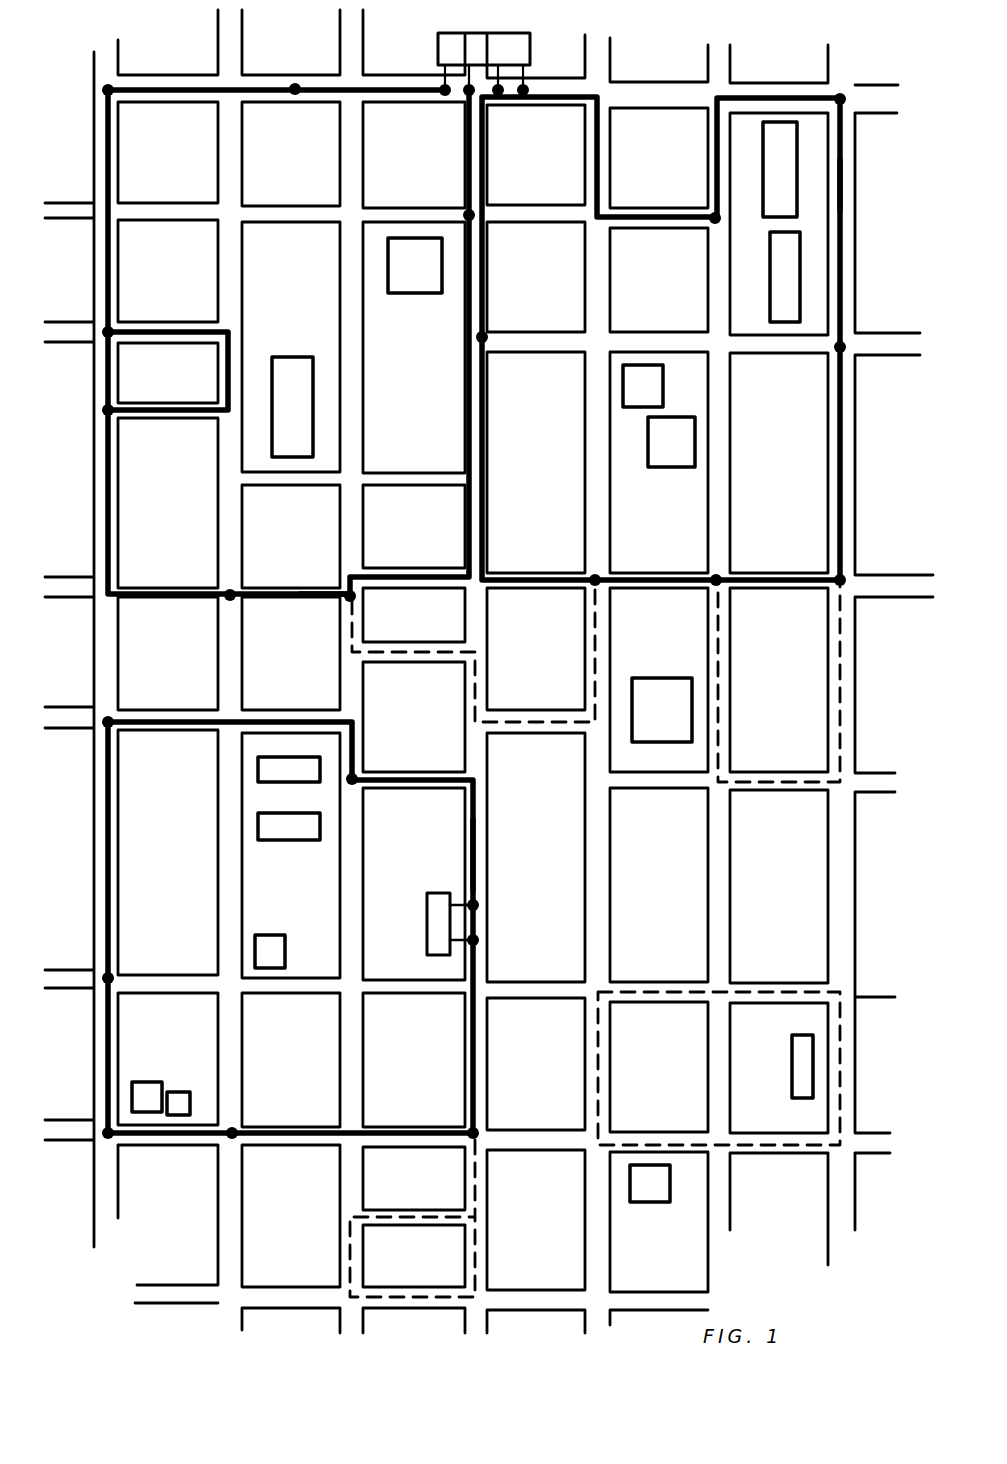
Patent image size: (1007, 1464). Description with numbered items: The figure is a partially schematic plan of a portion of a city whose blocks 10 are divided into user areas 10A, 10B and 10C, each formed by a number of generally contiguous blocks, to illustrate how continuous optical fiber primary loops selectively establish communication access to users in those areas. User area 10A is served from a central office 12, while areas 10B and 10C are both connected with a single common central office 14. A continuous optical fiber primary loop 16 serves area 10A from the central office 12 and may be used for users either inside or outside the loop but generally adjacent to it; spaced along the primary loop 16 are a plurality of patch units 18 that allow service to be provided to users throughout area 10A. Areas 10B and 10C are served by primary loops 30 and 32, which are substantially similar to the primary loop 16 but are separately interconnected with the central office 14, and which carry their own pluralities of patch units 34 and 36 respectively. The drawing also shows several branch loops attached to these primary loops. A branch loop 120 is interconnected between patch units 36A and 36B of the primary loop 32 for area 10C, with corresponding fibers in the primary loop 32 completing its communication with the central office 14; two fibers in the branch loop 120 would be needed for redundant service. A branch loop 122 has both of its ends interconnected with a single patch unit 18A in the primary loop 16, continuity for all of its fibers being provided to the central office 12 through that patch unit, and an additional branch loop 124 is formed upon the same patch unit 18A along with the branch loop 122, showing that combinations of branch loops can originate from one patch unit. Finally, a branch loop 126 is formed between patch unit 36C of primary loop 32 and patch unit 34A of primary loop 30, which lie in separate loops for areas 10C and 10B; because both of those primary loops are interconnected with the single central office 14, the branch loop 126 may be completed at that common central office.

The blocks 10 is at (654, 64).
The user area 10A is at (312, 915).
The user area 10B is at (313, 287).
The user area 10C is at (680, 291).
The central office 12 is at (432, 895).
The central office 14 is at (512, 33).
The primary loop 16 is at (492, 876).
The patch units 18 is at (112, 727).
The patch unit 18A is at (470, 1130).
The primary loop 30 is at (322, 602).
The primary loop 32 is at (858, 187).
The patch units 34 is at (115, 95).
The patch unit 34A is at (356, 598).
The patch units 36 is at (523, 97).
The patch unit 36A is at (836, 578).
The patch unit 36B is at (724, 586).
The patch unit 36C is at (592, 584).
The branch loop 120 is at (720, 680).
The branch loop 122 is at (603, 1035).
The branch loop 124 is at (482, 1222).
The branch loop 126 is at (470, 703).